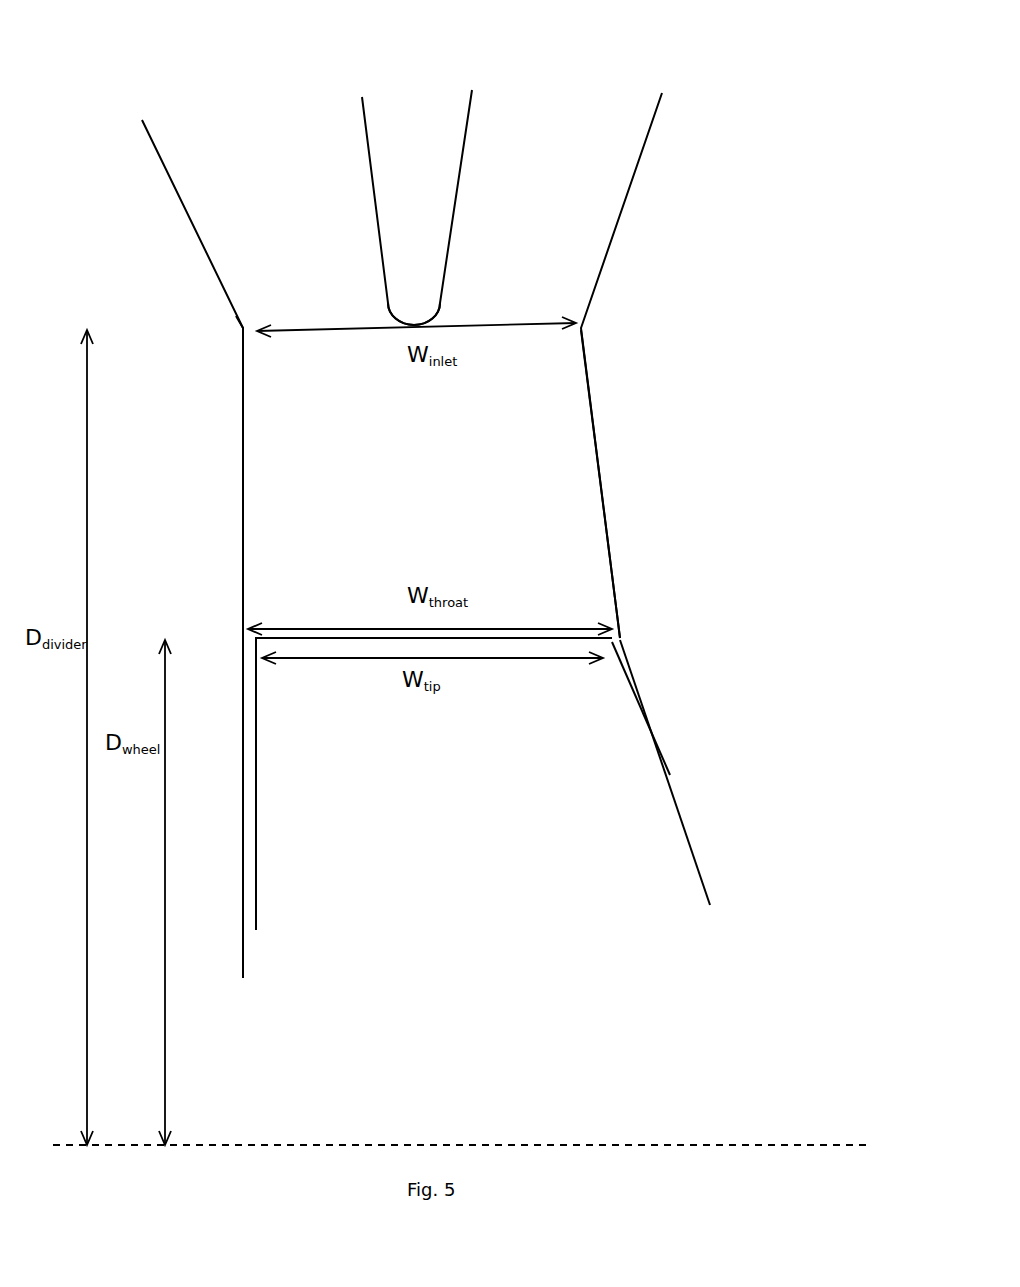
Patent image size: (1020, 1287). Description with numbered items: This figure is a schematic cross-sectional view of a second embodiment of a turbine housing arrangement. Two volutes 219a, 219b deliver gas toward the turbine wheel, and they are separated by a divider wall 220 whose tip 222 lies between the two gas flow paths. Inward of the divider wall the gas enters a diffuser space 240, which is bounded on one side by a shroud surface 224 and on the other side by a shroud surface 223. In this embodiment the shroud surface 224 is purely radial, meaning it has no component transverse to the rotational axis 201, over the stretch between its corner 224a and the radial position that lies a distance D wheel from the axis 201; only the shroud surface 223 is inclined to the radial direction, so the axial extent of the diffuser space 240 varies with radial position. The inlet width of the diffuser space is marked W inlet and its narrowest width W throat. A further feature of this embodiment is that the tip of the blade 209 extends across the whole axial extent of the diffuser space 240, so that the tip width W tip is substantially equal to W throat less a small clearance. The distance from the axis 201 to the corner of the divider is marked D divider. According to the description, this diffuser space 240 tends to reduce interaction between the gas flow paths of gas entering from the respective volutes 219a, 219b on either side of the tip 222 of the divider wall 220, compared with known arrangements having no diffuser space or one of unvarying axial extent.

The rotational axis 201 is at (493, 1147).
The blade 209 is at (620, 730).
The volute 219a is at (562, 190).
The volute 219b is at (255, 182).
The divider wall 220 is at (398, 225).
The tip of the divider wall 222 is at (415, 323).
The shroud surface 223 is at (595, 383).
The shroud surface 224 is at (243, 472).
The corner 224a is at (242, 327).
The diffuser space 240 is at (497, 470).